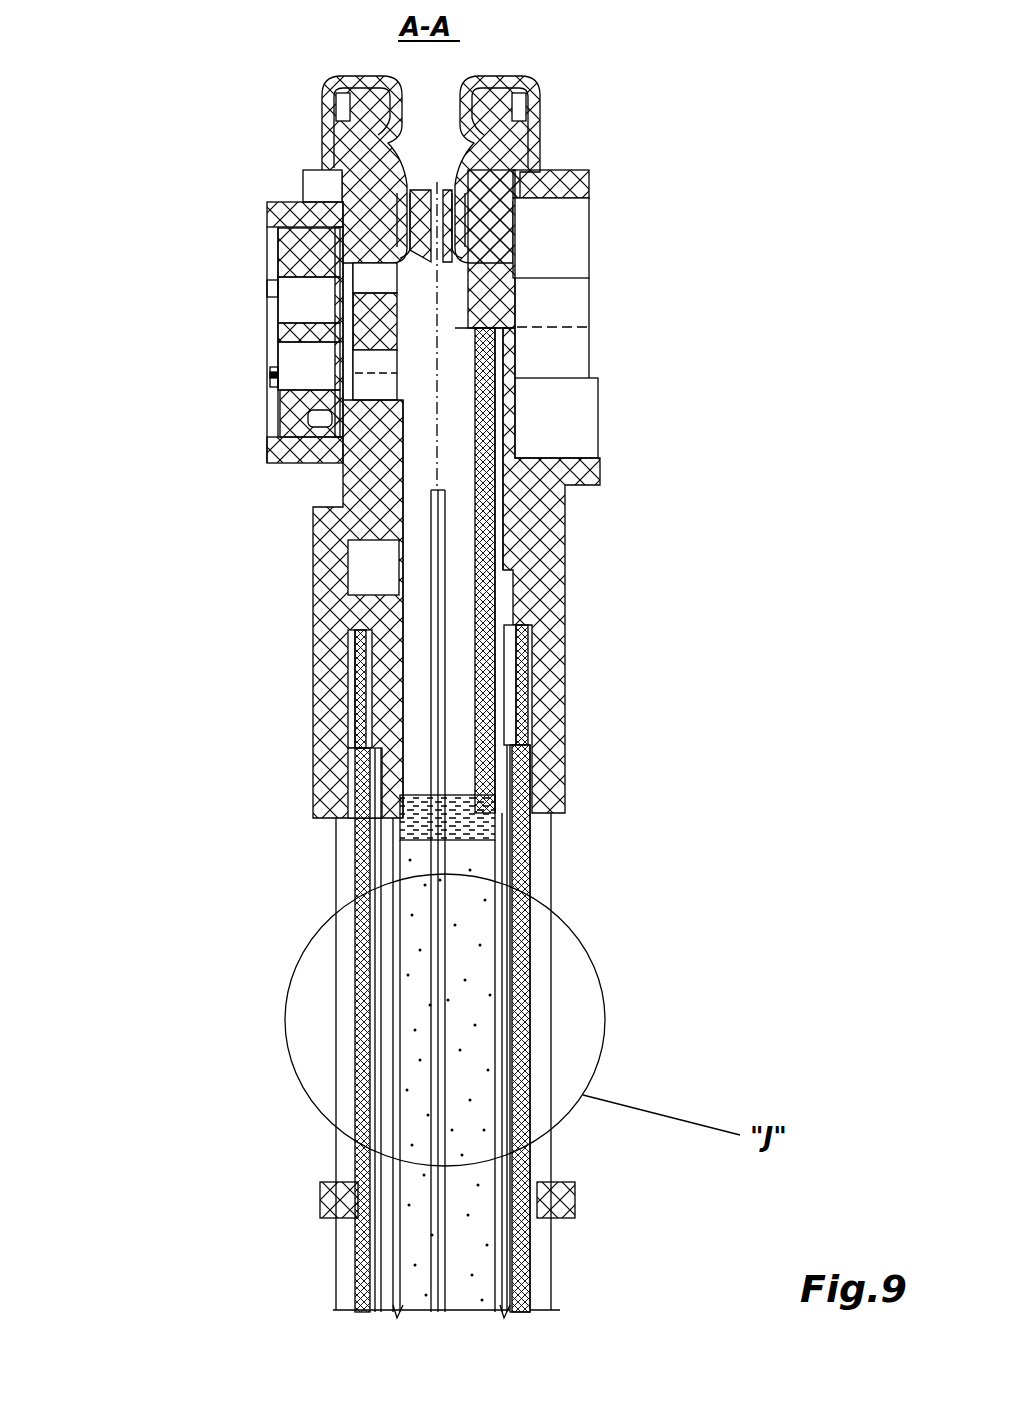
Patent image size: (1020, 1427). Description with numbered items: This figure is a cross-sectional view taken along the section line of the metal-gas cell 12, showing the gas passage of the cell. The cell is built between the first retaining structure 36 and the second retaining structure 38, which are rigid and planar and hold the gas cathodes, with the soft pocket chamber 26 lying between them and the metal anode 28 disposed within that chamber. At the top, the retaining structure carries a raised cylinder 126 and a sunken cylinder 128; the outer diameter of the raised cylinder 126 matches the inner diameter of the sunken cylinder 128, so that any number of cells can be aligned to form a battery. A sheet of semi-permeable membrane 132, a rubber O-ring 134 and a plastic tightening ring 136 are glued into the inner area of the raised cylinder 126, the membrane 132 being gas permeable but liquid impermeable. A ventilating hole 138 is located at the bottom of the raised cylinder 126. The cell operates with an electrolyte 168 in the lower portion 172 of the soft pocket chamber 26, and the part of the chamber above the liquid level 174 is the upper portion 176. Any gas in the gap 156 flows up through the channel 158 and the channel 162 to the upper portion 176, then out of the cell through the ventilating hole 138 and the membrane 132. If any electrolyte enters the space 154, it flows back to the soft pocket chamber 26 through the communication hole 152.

The metal-gas cell 12 is at (287, 724).
The soft pocket chamber 26 is at (460, 673).
The metal anode 28 is at (467, 858).
The first retaining structure 36 is at (323, 560).
The second retaining structure 38 is at (565, 553).
The raised cylinder 126 is at (300, 200).
The sunken cylinder 128 is at (590, 211).
The semi-permeable membrane 132 is at (342, 297).
The rubber O-ring 134 is at (280, 437).
The plastic tightening ring 136 is at (280, 250).
The ventilating hole 138 is at (268, 212).
The communication hole 152 is at (403, 371).
The space 154 is at (410, 333).
The gap 156 is at (535, 962).
The channel 158 is at (520, 706).
The channel 162 is at (515, 437).
The electrolyte 168 is at (393, 828).
The lower portion 172 is at (423, 877).
The liquid level 174 is at (352, 772).
The upper portion 176 is at (420, 676).